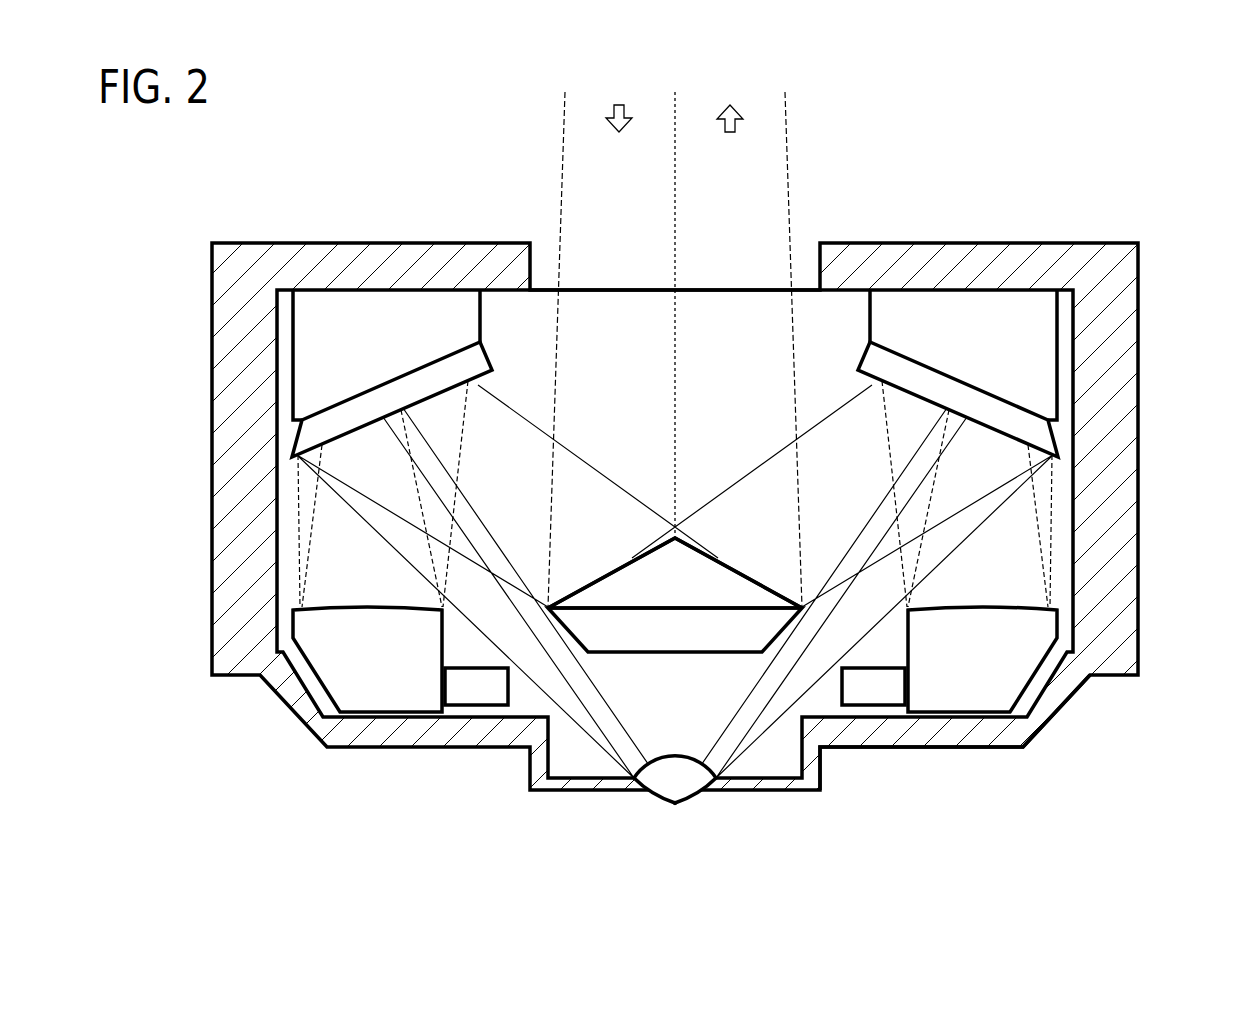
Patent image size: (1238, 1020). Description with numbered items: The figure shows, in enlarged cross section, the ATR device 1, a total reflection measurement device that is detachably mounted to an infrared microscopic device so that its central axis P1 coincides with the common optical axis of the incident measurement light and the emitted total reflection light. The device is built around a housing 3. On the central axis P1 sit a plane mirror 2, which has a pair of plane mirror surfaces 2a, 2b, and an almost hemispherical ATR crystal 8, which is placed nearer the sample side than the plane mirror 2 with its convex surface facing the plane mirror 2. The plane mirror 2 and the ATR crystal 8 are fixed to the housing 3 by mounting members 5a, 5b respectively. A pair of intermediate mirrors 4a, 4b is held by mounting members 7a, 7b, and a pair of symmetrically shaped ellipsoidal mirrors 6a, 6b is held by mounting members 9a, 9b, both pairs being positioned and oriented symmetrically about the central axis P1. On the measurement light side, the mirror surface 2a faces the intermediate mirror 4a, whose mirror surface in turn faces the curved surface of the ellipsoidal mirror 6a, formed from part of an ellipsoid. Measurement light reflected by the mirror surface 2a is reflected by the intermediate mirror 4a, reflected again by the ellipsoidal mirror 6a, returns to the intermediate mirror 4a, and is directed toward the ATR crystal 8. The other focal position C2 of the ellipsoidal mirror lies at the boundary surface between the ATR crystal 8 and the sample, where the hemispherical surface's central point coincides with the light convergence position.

The ATR device 1 is at (619, 469).
The plane mirror 2 is at (674, 440).
The plane mirror surface 2a is at (633, 553).
The plane mirror surface 2b is at (717, 553).
The housing 3 is at (1140, 432).
The intermediate mirror 4a is at (393, 393).
The intermediate mirror 4b is at (928, 387).
The mounting member 5a is at (708, 635).
The mounting member 5b is at (937, 747).
The ellipsoidal mirror 6a is at (330, 650).
The ellipsoidal mirror 6b is at (1017, 648).
The mounting member 7a is at (417, 310).
The mounting member 7b is at (997, 313).
The ATR crystal 8 is at (697, 798).
The mounting member 9a is at (482, 687).
The mounting member 9b is at (868, 687).
The focal position C2 is at (667, 806).
The central axis P1 is at (677, 108).